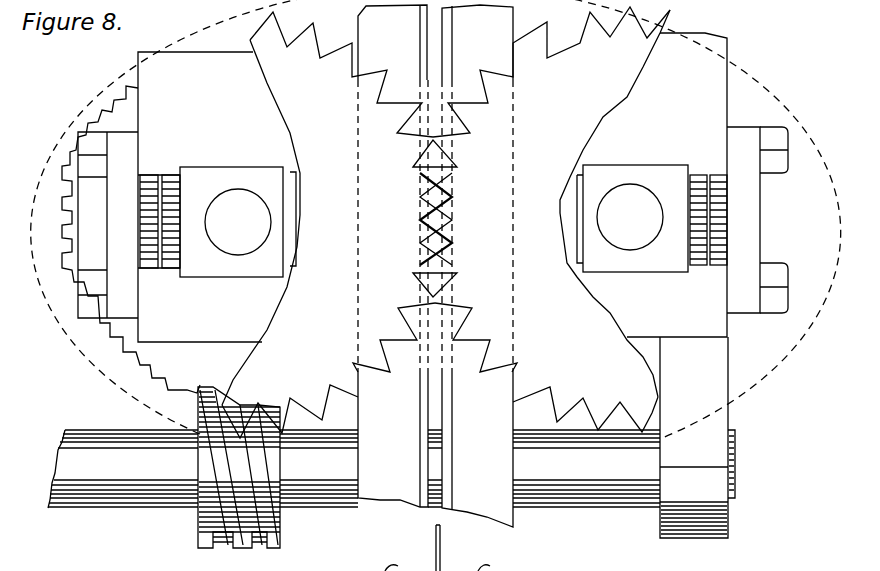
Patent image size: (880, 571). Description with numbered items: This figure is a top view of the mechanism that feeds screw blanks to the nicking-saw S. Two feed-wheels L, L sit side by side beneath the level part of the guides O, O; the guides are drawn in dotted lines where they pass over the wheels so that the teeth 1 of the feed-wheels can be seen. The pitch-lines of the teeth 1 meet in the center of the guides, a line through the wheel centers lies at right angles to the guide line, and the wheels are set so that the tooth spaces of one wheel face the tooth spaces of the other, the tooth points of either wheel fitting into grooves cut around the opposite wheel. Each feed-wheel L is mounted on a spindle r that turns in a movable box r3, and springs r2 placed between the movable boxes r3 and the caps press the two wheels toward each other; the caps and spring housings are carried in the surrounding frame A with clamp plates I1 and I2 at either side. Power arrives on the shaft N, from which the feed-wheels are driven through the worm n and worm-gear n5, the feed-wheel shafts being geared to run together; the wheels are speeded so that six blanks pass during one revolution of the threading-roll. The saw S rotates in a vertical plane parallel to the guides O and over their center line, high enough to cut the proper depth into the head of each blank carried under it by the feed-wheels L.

The frame A is at (436, 285).
The left clamp plate with bolts I1 is at (108, 225).
The right clamp plate with bolts I2 is at (757, 220).
The springs r2 is at (433, 208).
The movable boxes r3 is at (434, 221).
The spindles r is at (434, 219).
The feed-wheels L is at (446, 206).
The teeth 1 is at (440, 289).
The guides O is at (435, 266).
The shaft N is at (354, 469).
The worm-gear n is at (239, 479).
The worm-gear n5 is at (134, 239).
The nicking-saw S is at (427, 548).